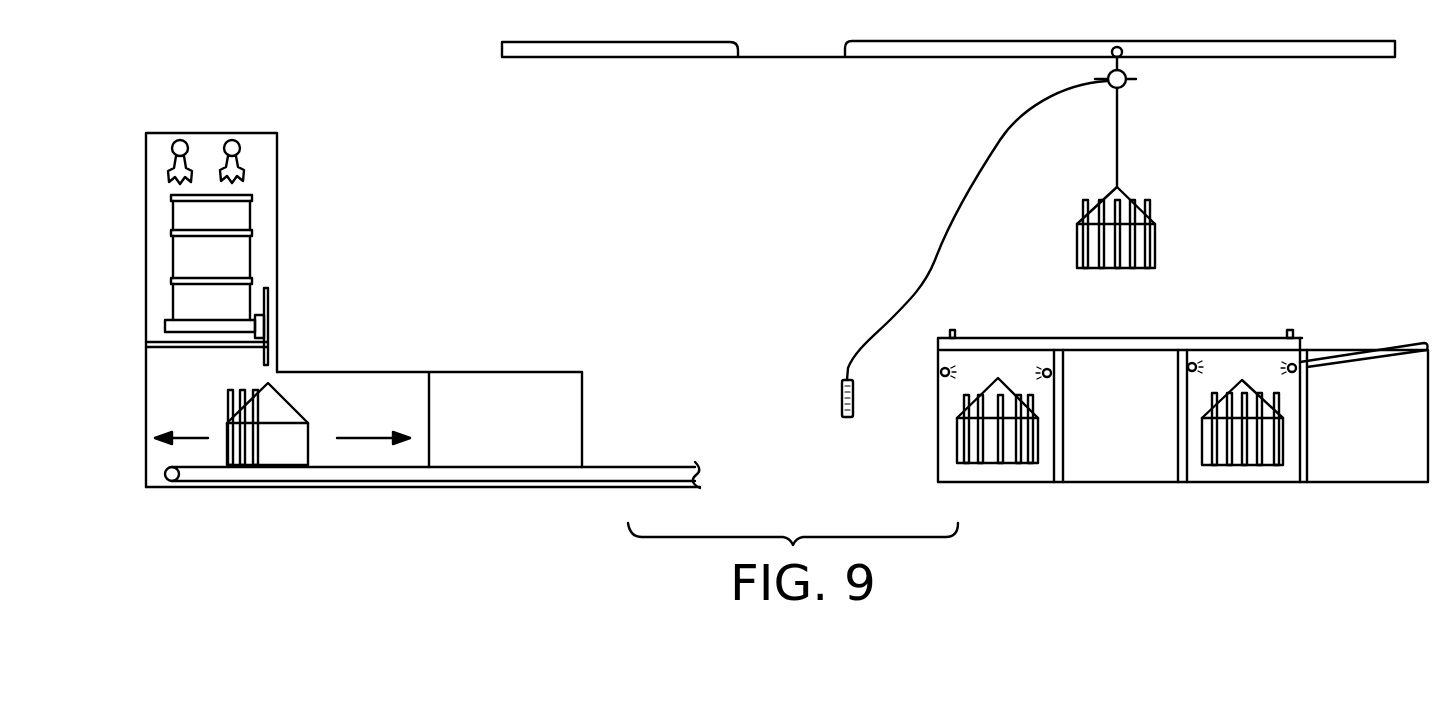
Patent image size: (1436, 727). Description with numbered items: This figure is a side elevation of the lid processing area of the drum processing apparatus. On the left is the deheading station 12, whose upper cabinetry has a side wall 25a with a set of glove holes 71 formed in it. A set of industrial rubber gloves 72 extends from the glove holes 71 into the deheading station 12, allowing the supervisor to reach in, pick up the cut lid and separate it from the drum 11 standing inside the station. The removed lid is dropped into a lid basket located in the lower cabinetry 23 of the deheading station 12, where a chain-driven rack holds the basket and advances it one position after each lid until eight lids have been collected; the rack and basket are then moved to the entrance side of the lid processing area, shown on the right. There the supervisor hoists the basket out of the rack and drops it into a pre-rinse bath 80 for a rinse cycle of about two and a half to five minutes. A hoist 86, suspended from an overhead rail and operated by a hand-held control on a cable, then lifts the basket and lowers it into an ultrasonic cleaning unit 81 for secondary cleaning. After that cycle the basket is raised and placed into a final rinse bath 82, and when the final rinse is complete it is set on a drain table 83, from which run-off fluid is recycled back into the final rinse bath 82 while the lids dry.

The drum 11 is at (187, 258).
The deheading station 12 is at (249, 281).
The lower cabinetry 23 is at (162, 390).
The side wall 25a is at (260, 158).
The glove holes 71 is at (228, 140).
The industrial rubber gloves 72 is at (220, 173).
The pre-rinse bath 80 is at (963, 422).
The ultrasonic cleaning unit 81 is at (1133, 465).
The final rinse bath 82 is at (1245, 472).
The drain table 83 is at (1372, 443).
The hoist 86 is at (1118, 135).